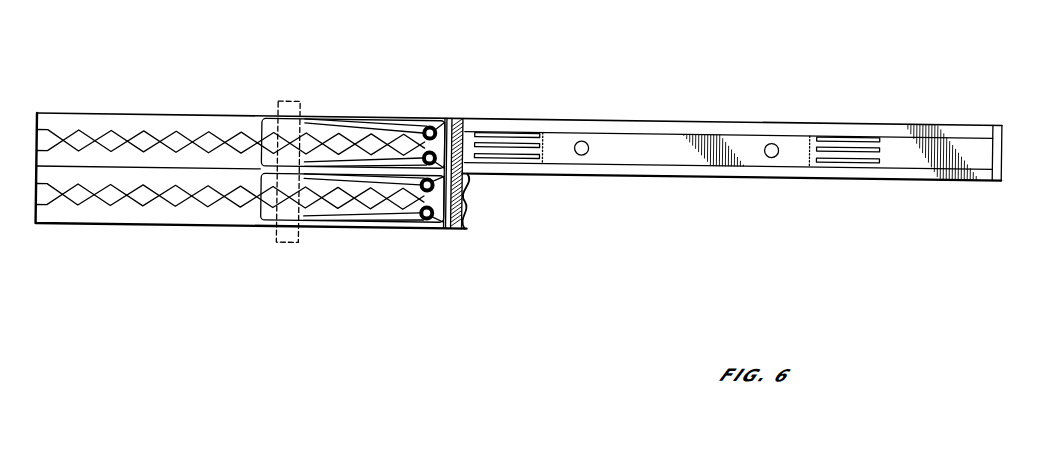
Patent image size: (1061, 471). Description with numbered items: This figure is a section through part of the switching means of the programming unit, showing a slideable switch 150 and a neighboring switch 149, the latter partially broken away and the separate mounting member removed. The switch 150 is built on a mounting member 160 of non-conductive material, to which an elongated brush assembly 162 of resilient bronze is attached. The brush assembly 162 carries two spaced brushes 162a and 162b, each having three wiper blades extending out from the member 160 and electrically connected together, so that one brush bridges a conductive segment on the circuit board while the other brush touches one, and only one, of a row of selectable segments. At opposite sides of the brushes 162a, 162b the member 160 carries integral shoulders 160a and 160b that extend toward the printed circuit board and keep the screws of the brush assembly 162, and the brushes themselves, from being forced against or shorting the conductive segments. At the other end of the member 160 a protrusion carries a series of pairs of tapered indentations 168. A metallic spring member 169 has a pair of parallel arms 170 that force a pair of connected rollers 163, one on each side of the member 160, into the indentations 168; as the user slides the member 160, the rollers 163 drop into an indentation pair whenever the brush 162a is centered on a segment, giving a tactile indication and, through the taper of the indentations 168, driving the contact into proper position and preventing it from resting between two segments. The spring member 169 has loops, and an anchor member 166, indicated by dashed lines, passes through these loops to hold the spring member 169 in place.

The switch 149 is at (382, 225).
The slideable switch 150 is at (420, 110).
The mounting member 160 is at (478, 126).
The shoulder 160a is at (1010, 98).
The shoulder 160b is at (466, 122).
The brush assembly 162 is at (663, 146).
The brush 162a is at (874, 129).
The brush 162b is at (480, 120).
The rollers 163 is at (446, 116).
The anchor member 166 is at (289, 97).
The tapered indentations 168 is at (111, 127).
The spring member 169 is at (272, 111).
The parallel arms 170 is at (340, 163).